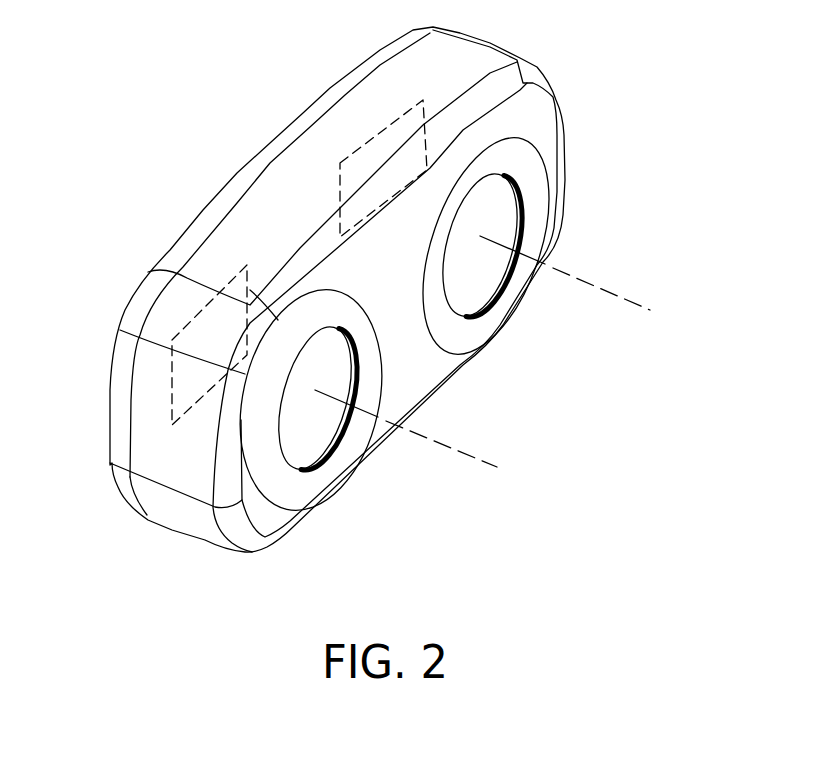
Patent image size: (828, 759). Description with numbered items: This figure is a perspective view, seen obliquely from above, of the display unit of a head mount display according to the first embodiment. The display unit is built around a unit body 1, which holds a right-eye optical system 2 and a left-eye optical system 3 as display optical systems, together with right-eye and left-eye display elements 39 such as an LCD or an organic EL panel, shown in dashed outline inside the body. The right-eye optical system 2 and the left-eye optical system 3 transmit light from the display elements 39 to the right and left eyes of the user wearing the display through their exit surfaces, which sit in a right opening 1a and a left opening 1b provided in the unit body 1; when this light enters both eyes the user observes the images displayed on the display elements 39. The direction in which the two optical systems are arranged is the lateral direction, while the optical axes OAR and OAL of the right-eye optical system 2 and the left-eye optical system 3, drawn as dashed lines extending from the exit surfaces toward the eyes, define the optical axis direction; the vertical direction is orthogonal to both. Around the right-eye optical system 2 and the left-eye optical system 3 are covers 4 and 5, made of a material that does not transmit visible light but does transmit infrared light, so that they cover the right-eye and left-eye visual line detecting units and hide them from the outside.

The unit body 1 is at (298, 208).
The right opening 1a is at (500, 300).
The left opening 1b is at (328, 460).
The right-eye optical system 2 is at (500, 220).
The left-eye optical system 3 is at (290, 440).
The cover 4 is at (480, 322).
The cover 5 is at (348, 437).
The display elements 39 is at (370, 140).
The optical axis of the right-eye optical system OAR is at (597, 290).
The optical axis of the left-eye optical system OAL is at (467, 456).